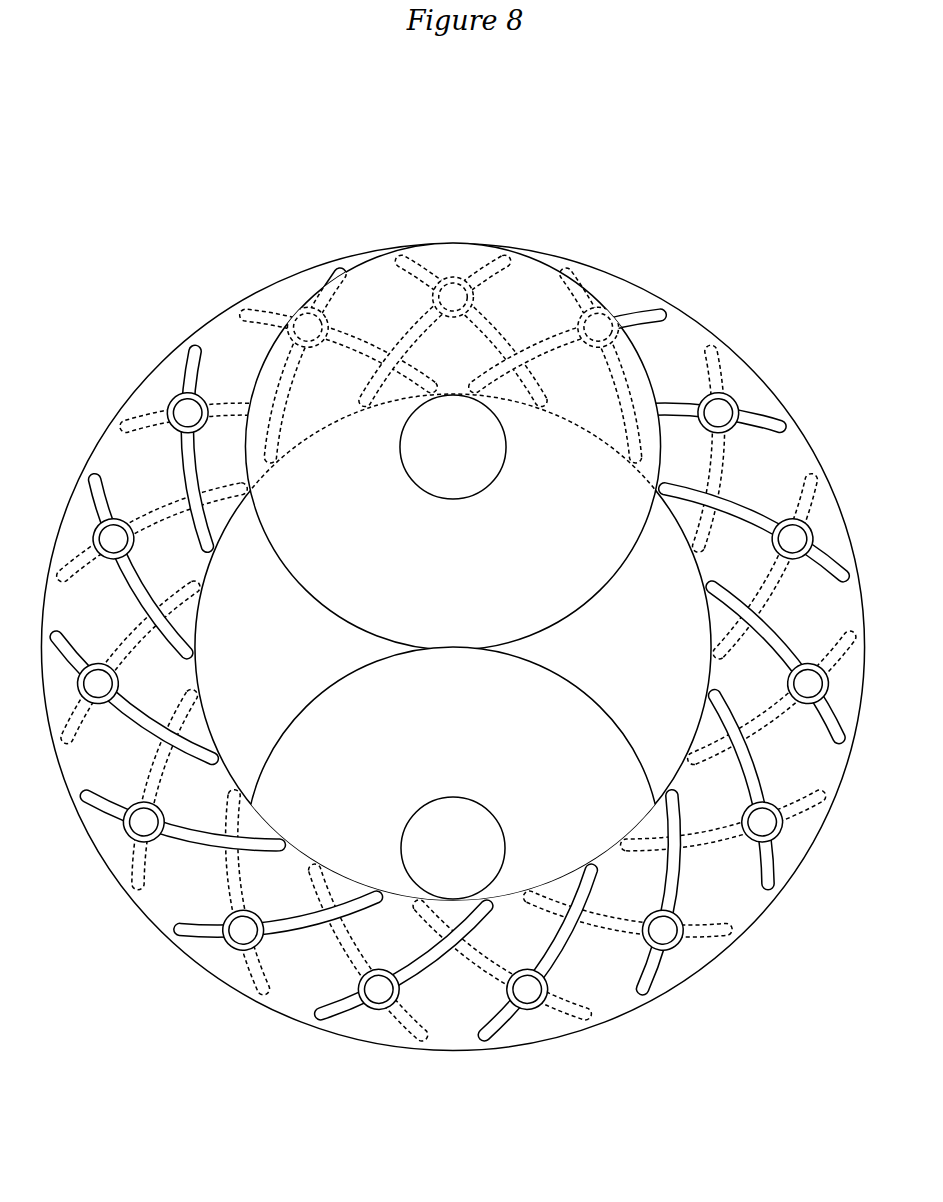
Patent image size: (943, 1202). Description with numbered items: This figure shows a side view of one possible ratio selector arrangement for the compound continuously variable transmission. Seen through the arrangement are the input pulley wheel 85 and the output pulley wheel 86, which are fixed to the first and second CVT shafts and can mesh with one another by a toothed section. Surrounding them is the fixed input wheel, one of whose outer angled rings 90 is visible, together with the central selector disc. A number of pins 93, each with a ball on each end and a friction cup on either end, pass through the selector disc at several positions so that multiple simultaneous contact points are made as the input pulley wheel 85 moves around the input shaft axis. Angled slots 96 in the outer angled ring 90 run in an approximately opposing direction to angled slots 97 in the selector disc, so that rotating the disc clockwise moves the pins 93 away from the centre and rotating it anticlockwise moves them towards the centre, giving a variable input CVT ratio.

The input pulley wheel 85 is at (360, 501).
The output pulley wheel 86 is at (358, 774).
The outer angled ring 90 is at (731, 886).
The pin 93 is at (675, 940).
The angled slot 96 is at (769, 414).
The angled slot 97 is at (716, 342).